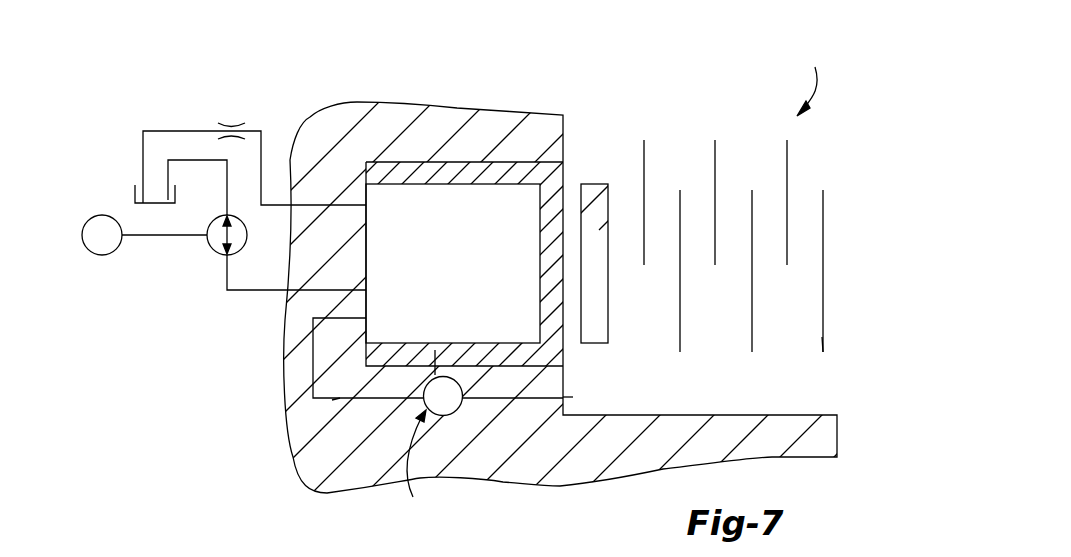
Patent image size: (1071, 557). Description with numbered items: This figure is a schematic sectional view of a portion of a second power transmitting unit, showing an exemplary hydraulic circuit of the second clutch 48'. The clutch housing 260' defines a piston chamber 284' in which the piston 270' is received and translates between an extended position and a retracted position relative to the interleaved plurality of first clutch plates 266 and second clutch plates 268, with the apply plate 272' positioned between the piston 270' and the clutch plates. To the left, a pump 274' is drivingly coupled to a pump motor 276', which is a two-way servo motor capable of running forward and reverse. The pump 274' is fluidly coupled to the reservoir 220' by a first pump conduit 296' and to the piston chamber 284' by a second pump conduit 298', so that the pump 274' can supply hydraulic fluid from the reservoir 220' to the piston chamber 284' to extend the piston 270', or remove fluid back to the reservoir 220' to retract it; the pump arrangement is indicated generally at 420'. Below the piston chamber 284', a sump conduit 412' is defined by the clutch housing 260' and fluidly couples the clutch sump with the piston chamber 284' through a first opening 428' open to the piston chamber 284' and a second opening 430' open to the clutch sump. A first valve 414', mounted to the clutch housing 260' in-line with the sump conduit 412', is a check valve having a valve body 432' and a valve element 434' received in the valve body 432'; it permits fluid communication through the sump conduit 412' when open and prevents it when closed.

The second clutch 48' is at (808, 195).
The first clutch plates 266 is at (715, 168).
The second clutch plates 268 is at (822, 337).
The clutch housing 260' is at (535, 274).
The piston chamber 284' is at (453, 196).
The piston 270' is at (472, 214).
The apply plate 272' is at (681, 200).
The pump assembly 420' is at (254, 111).
The first pump conduit 296' is at (178, 151).
The reservoir 220' is at (112, 179).
The pump motor 276' is at (139, 278).
The pump 274' is at (217, 278).
The second pump conduit 298' is at (295, 321).
The first opening 428' is at (438, 342).
The valve element 434' is at (470, 347).
The second opening 430' is at (619, 379).
The valve body 432' is at (484, 448).
The first valve 414' is at (430, 464).
The sump conduit 412' is at (343, 468).